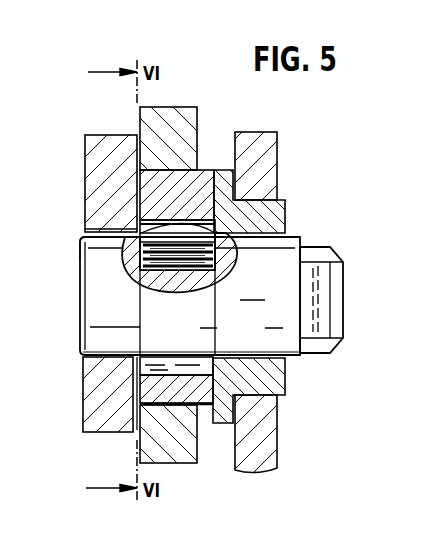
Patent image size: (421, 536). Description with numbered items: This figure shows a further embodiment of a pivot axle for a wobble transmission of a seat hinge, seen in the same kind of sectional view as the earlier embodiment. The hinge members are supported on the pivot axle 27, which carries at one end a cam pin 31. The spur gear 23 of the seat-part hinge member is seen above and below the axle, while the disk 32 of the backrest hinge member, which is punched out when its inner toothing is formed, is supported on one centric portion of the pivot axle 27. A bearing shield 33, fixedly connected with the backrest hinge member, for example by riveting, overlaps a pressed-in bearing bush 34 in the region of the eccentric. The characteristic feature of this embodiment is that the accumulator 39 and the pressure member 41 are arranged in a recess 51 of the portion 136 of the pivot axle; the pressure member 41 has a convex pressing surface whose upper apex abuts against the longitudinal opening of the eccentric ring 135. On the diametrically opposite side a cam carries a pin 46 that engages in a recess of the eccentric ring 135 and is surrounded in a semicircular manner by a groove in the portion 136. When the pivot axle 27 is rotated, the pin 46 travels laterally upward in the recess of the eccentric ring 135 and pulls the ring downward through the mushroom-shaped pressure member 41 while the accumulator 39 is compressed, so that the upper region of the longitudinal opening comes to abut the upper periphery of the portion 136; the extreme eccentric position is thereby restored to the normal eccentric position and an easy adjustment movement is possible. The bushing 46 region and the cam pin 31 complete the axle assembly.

The spur gear 23 is at (168, 143).
The pivot axle 27 is at (83, 243).
The cam pin 31 is at (328, 270).
The disk 32 is at (112, 140).
The bearing shield 33 is at (262, 448).
The bearing bush 34 is at (255, 383).
The accumulator 39 is at (218, 218).
The pressure member 41 is at (190, 230).
The pin 46 is at (150, 368).
The recess 51 is at (133, 258).
The eccentric ring 135 is at (155, 203).
The portion of the pivot axle 136 is at (150, 313).